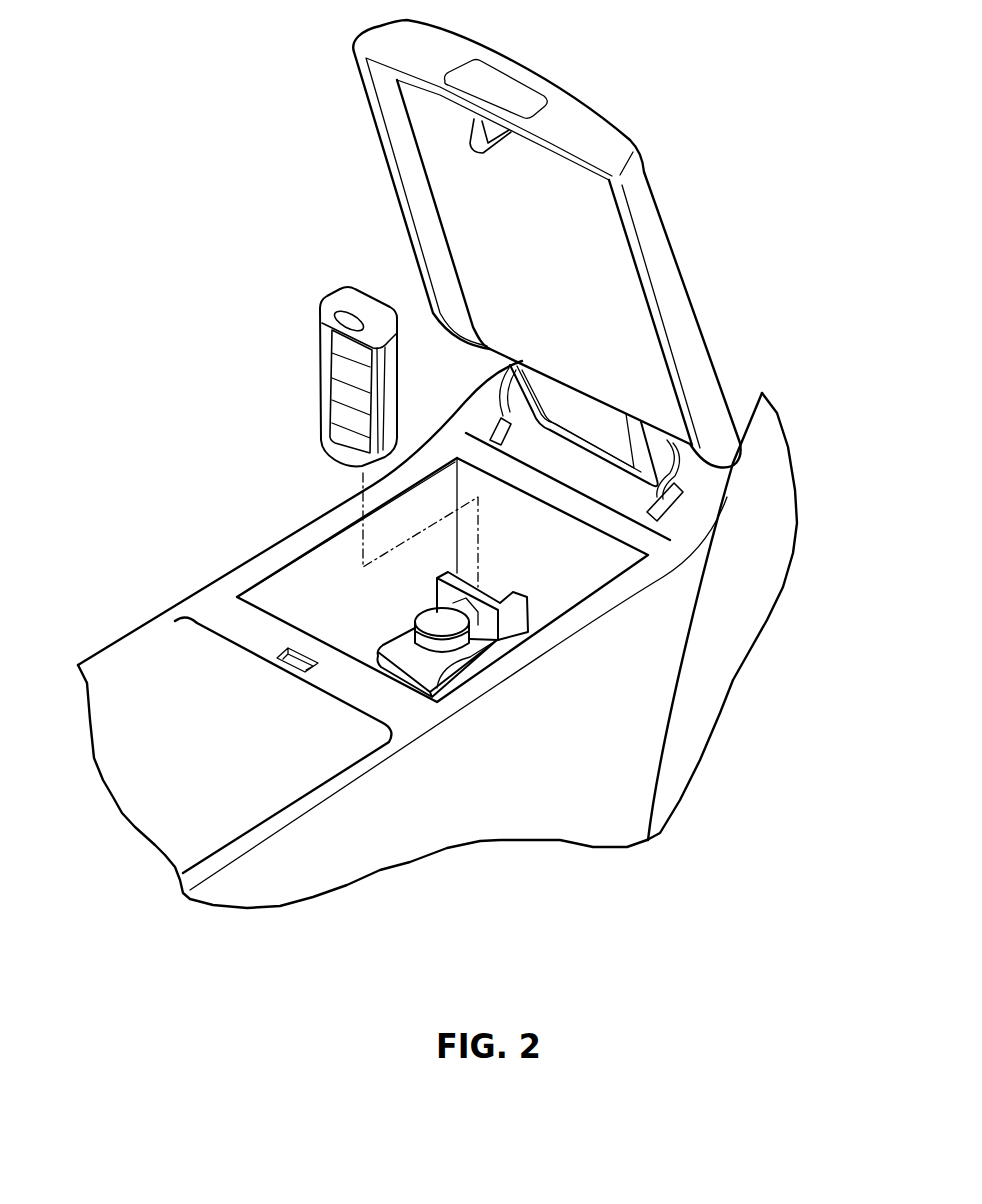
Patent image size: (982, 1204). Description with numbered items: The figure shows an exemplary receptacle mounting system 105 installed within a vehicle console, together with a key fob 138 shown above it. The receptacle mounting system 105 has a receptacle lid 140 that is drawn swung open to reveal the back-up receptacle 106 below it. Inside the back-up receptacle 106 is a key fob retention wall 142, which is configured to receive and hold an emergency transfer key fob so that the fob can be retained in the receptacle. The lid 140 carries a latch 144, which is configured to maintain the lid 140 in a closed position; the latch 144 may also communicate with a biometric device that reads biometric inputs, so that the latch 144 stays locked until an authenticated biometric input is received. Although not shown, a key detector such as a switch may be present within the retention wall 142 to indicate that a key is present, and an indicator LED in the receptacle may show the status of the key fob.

The receptacle mounting system 105 is at (688, 283).
The receptacle lid 140 is at (551, 253).
The latch 144 is at (474, 127).
The remote key fob 138 is at (318, 328).
The back-up receptacle 106 is at (468, 580).
The key fob retention wall 142 is at (513, 618).